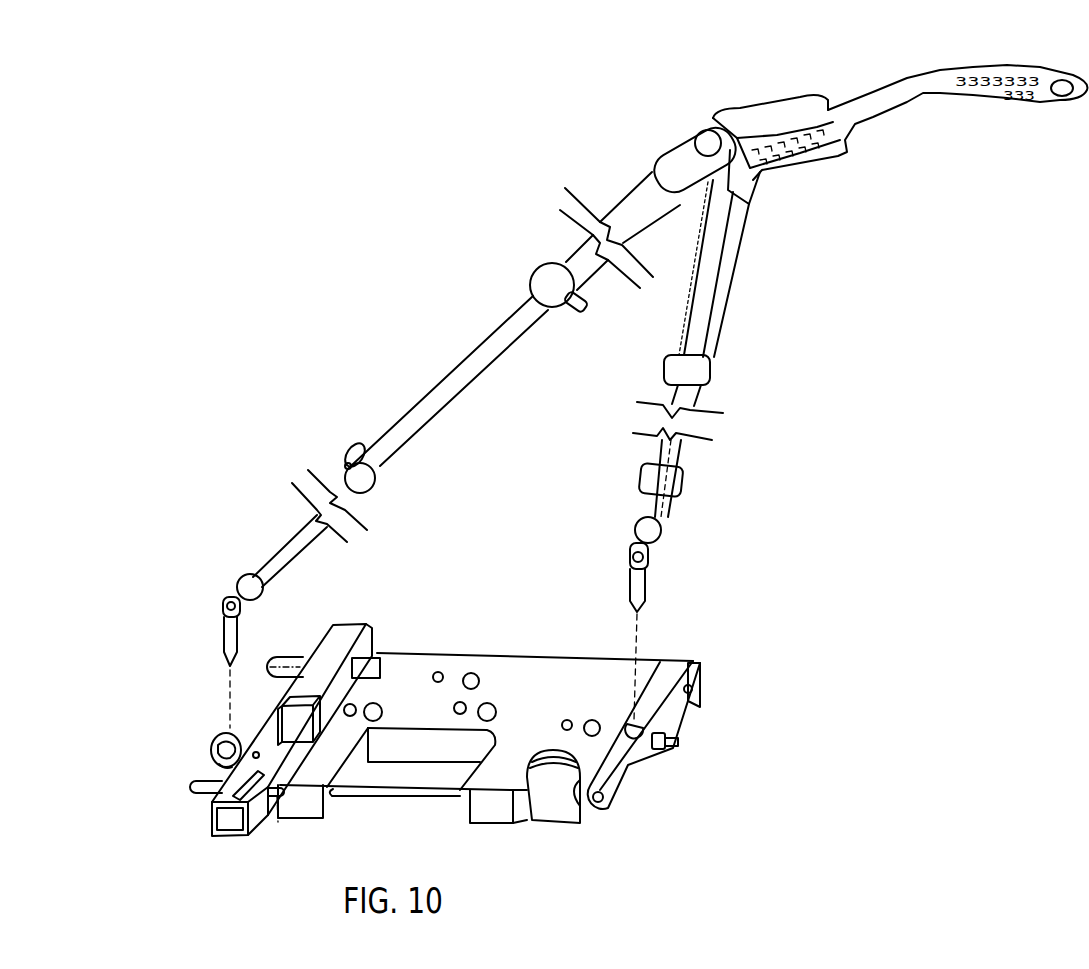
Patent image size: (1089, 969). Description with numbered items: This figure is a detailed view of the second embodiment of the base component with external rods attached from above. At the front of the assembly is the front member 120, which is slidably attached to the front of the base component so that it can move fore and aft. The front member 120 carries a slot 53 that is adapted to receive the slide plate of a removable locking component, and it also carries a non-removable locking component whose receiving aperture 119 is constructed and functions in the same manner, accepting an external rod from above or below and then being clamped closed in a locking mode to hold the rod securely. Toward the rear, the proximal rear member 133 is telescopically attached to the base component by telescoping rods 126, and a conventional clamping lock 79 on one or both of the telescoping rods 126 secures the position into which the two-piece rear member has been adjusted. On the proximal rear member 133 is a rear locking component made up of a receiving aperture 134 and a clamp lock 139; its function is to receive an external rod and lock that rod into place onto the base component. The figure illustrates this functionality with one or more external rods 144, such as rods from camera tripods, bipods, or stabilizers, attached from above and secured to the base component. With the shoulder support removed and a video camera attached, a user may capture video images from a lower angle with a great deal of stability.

The external rod 144 is at (724, 308).
The front member 120 is at (350, 619).
The telescoping rods 126 is at (382, 799).
The slot 53 is at (245, 781).
The receiving aperture 119 is at (206, 740).
The clamping lock 79 is at (556, 810).
The receiving aperture 134 is at (636, 741).
The clamp lock 139 is at (650, 717).
The proximal rear member 133 is at (690, 656).